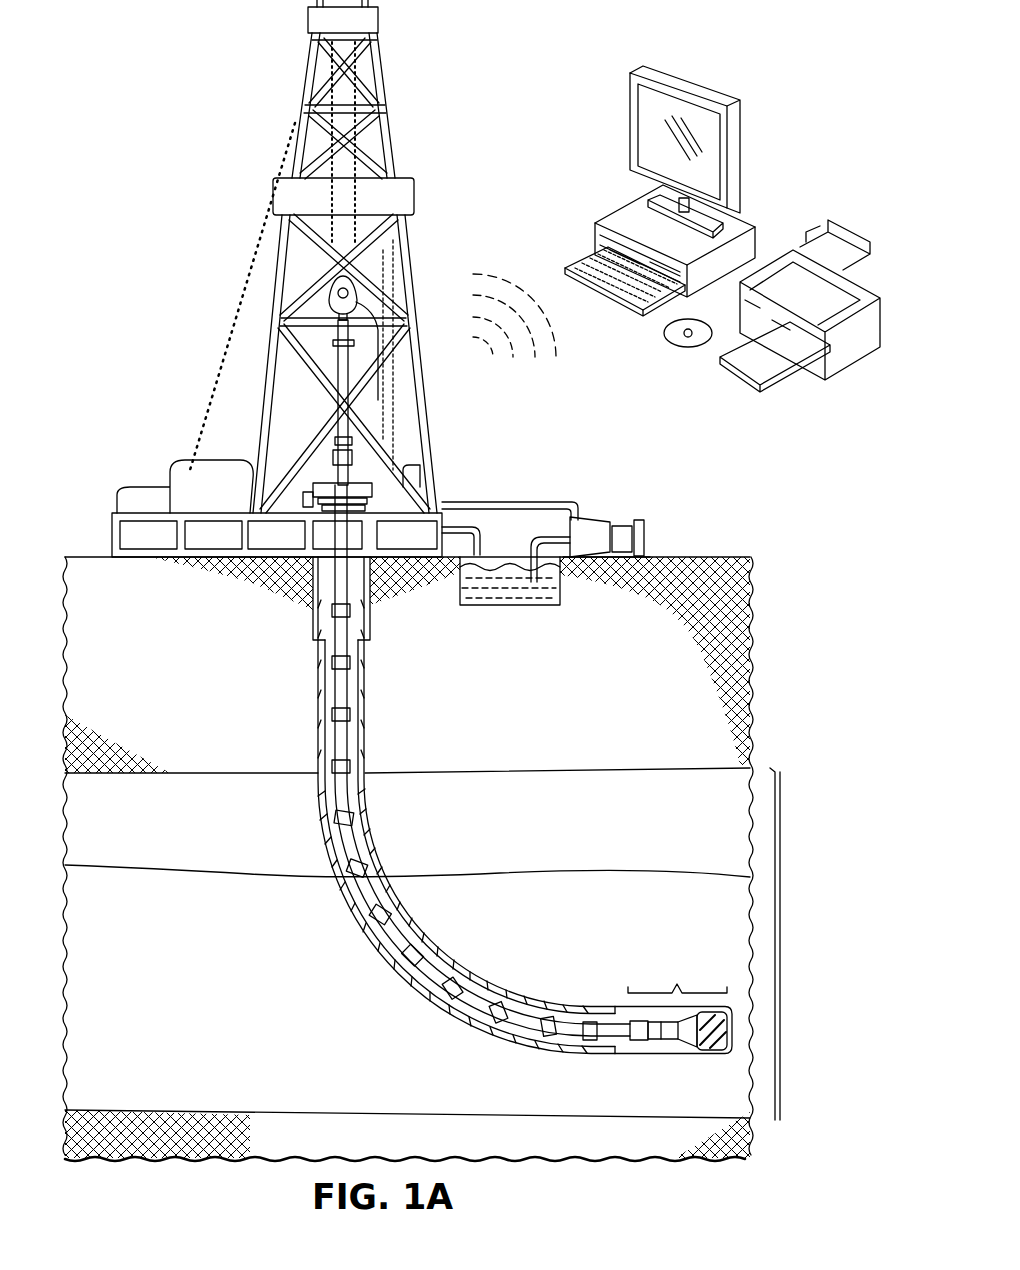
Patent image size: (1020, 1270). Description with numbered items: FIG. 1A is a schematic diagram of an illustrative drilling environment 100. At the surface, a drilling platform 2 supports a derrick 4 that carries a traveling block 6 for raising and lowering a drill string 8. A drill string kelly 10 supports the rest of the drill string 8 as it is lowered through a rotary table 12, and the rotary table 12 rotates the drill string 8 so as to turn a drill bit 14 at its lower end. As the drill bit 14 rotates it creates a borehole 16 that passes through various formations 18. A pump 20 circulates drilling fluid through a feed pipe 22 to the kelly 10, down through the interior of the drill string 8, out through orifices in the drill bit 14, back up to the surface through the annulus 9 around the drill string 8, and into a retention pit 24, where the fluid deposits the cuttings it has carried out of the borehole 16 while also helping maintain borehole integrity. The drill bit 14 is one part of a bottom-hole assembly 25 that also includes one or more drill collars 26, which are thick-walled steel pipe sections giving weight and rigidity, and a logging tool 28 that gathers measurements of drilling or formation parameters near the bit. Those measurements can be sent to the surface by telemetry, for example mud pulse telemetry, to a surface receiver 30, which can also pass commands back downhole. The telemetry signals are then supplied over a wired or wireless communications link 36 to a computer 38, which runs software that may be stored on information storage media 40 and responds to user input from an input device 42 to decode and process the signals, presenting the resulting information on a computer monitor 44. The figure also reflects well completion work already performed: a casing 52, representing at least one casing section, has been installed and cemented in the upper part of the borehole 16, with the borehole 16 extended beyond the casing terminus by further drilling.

The drilling system 100 is at (225, 168).
The drilling platform 2 is at (110, 533).
The derrick 4 is at (397, 142).
The traveling block 6 is at (360, 302).
The drill string 8 is at (352, 744).
The annulus 9 is at (320, 695).
The drill string kelly 10 is at (340, 357).
The rotary table 12 is at (370, 485).
The drill bit 14 is at (714, 1046).
The borehole 16 is at (322, 762).
The formations 18 is at (780, 932).
The pump 20 is at (592, 520).
The feed pipe 22 is at (542, 502).
The retention pit 24 is at (520, 608).
The bottom-hole assembly 25 is at (677, 975).
The drill collars 26 is at (660, 1046).
The logging tool 28 is at (638, 1046).
The surface receiver 30 is at (353, 441).
The communications link 36 is at (500, 280).
The computer 38 is at (622, 212).
The information storage media 40 is at (690, 352).
The input device 42 is at (583, 248).
The computer monitor 44 is at (696, 96).
The casing 52 is at (323, 830).